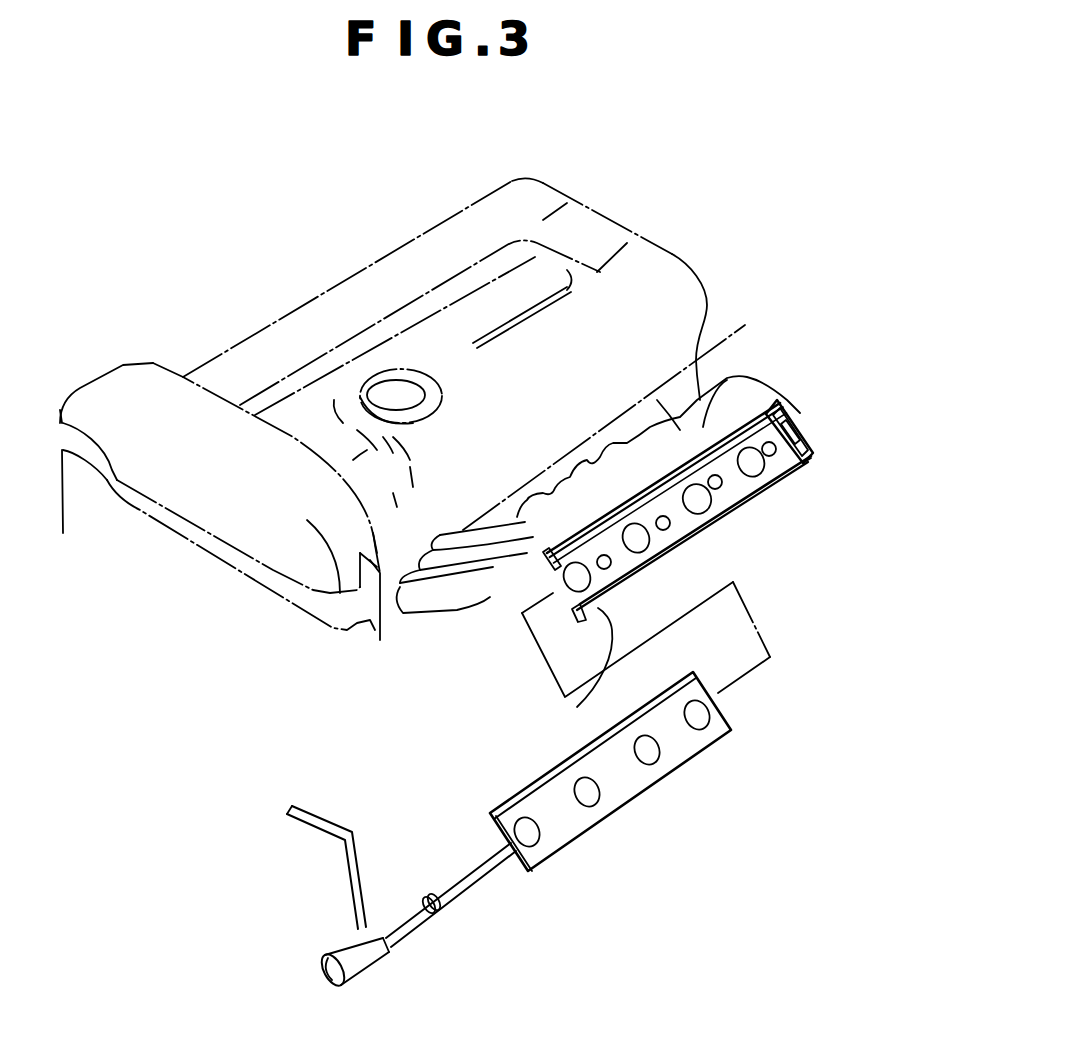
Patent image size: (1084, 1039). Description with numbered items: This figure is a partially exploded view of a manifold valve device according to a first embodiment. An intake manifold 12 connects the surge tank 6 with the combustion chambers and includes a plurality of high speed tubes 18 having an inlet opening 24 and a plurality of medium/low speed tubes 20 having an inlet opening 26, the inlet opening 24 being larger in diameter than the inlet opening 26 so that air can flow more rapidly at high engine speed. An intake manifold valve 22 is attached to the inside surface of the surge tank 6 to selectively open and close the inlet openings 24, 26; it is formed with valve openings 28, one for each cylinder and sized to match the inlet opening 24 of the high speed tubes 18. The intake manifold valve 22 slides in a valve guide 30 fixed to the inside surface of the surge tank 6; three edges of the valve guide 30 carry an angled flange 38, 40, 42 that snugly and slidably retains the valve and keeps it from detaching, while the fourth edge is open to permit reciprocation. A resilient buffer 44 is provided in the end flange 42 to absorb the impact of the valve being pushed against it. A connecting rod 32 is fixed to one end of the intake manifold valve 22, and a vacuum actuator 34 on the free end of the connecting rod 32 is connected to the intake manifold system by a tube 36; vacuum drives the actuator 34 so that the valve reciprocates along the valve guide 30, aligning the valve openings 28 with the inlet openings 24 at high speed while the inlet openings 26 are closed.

The surge tank 6 is at (673, 430).
The intake manifold 12 is at (340, 719).
The high speed tubes 18 is at (522, 613).
The medium/low speed tubes 20 is at (497, 550).
The intake manifold valve 22 is at (661, 774).
The inlet opening 24 is at (553, 620).
The inlet opening 26 is at (577, 707).
The valve openings 28 is at (650, 758).
The valve guide 30 is at (803, 470).
The connecting rod 32 is at (467, 887).
The vacuum actuator 34 is at (335, 947).
The tube 36 is at (307, 830).
The angled flange 38 is at (741, 453).
The angled flange 40 is at (707, 543).
The end flange 42 is at (787, 407).
The buffer 44 is at (793, 430).